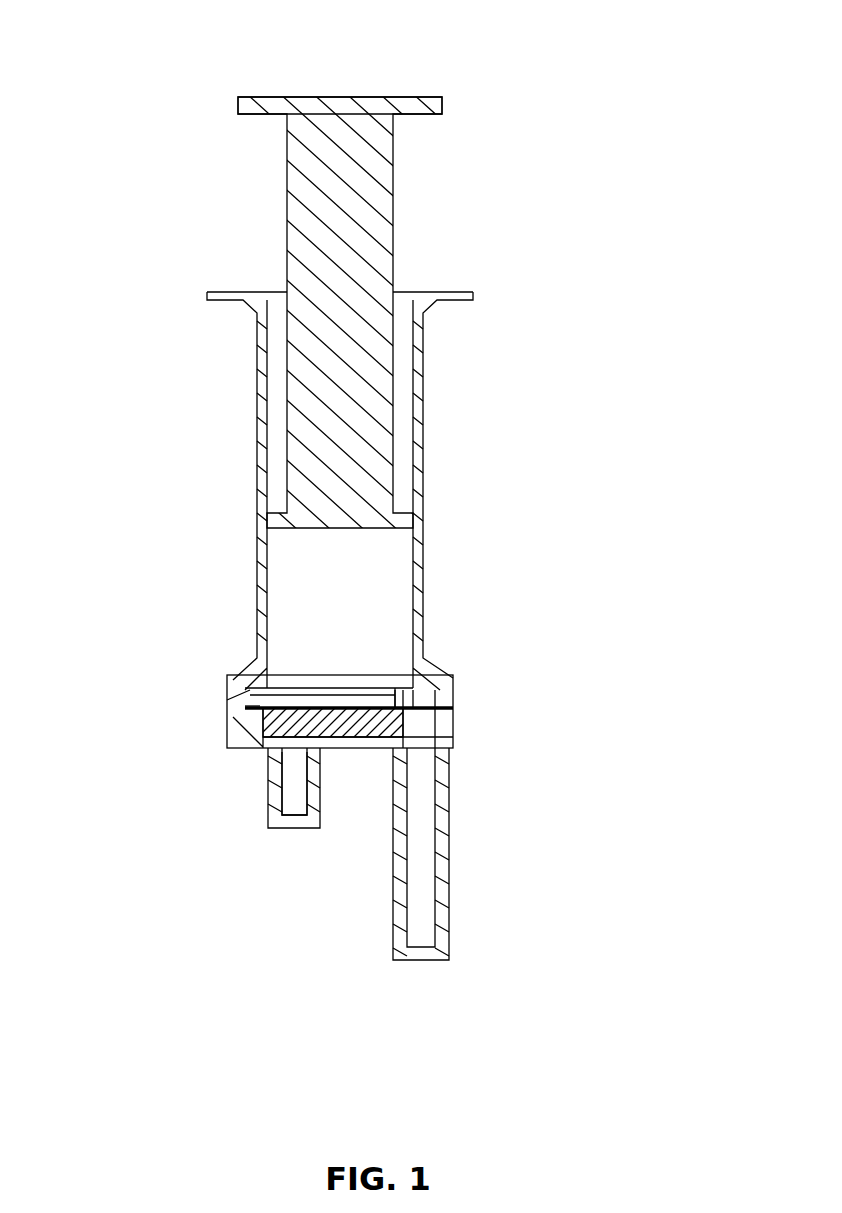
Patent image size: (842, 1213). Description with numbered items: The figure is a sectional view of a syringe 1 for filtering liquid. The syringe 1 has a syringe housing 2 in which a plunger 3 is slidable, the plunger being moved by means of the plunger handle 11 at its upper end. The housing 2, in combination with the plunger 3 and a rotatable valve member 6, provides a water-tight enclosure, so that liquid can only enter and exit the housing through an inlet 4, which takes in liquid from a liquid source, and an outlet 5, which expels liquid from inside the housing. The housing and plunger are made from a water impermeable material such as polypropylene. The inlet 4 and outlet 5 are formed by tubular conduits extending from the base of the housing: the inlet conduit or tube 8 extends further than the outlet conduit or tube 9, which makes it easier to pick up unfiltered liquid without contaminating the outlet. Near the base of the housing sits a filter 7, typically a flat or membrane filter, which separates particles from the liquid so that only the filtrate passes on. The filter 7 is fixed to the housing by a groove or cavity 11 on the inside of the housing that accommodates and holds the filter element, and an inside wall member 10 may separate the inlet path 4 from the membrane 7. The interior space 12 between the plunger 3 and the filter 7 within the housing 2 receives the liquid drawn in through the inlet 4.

The syringe 1 is at (187, 170).
The syringe housing 2 is at (423, 455).
The plunger 3 is at (393, 187).
The inlet 4 is at (428, 746).
The outlet 5 is at (283, 748).
The rotatable valve member 6 is at (292, 722).
The filter 7 is at (377, 707).
The inlet conduit or tube 8 is at (445, 890).
The outlet conduit or tube 9 is at (270, 807).
The inside wall member 10 is at (398, 698).
The plunger handle 11 is at (418, 98).
The chamber 12 is at (395, 558).